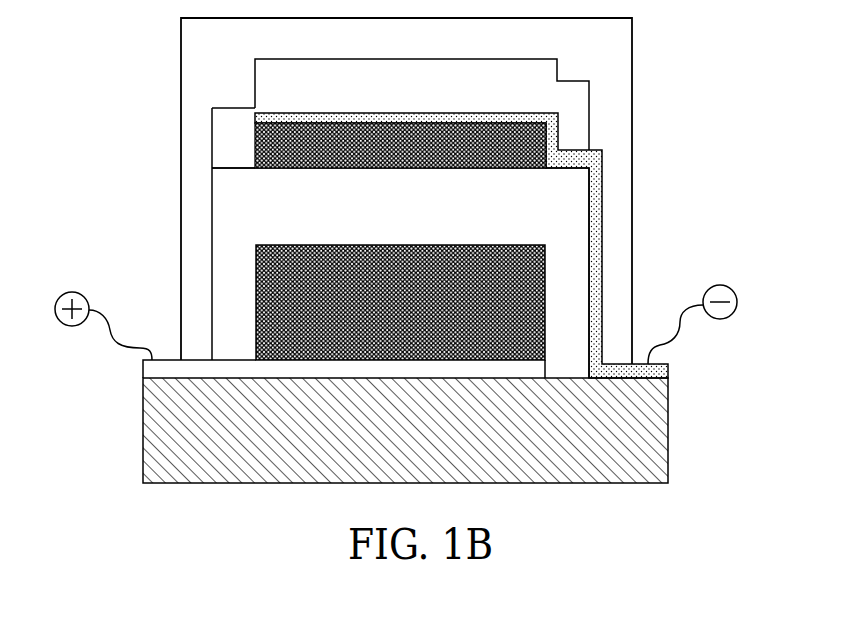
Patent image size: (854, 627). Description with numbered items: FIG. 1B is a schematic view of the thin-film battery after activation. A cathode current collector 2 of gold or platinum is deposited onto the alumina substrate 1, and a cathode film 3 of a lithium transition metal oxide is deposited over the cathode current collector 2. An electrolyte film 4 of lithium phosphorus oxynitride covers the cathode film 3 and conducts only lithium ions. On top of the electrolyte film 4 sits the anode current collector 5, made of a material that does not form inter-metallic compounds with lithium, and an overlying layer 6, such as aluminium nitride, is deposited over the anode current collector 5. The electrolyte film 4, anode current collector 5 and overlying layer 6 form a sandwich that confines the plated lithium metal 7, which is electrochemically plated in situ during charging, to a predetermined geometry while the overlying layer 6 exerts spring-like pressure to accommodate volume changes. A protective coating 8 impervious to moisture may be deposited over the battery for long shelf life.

The alumina substrate 1 is at (405, 430).
The cathode current collector 2 is at (128, 377).
The cathode film 3 is at (400, 302).
The electrolyte film 4 is at (400, 243).
The anode current collector 5 is at (612, 164).
The overlying layer 6 is at (400, 113).
The plated lithium metal 7 is at (400, 145).
The protective coating 8 is at (406, 191).